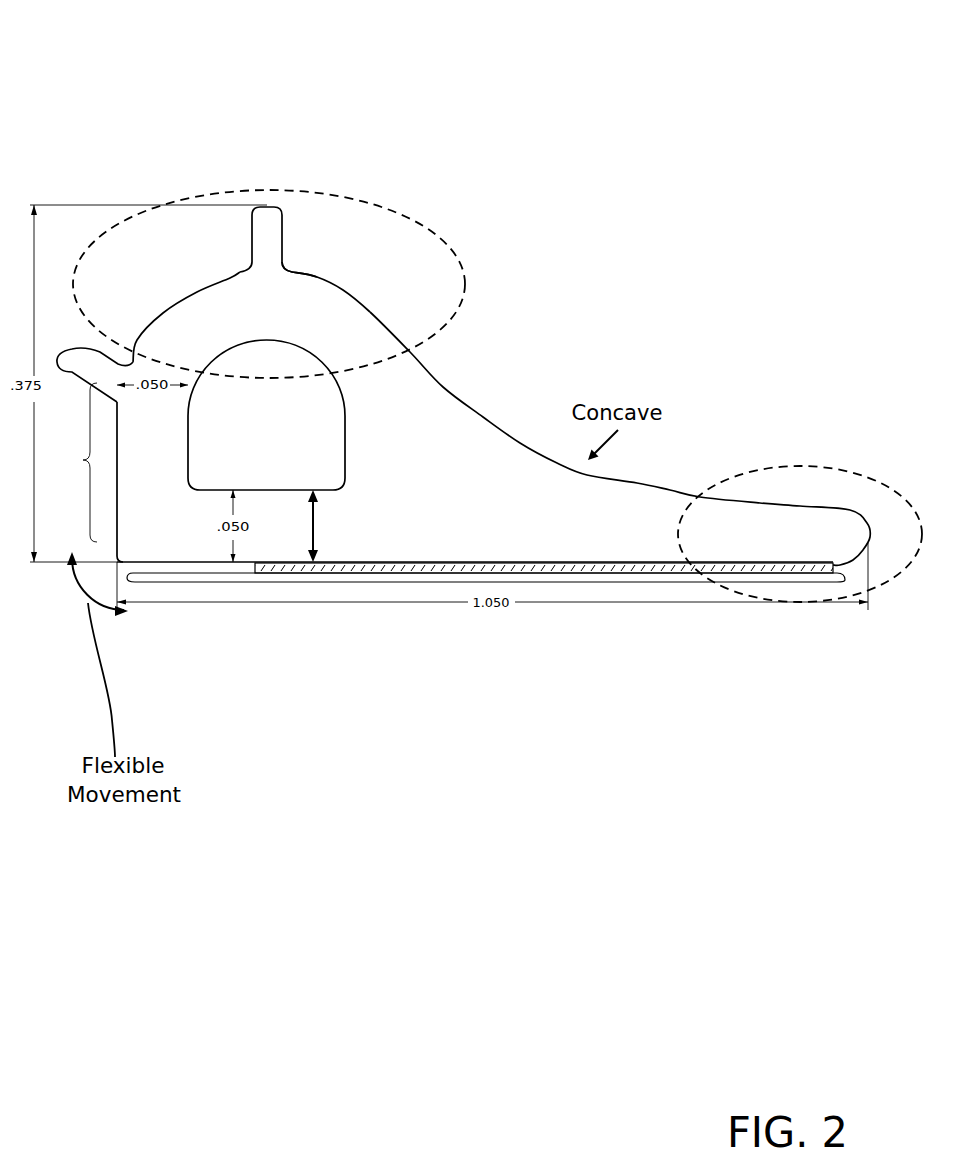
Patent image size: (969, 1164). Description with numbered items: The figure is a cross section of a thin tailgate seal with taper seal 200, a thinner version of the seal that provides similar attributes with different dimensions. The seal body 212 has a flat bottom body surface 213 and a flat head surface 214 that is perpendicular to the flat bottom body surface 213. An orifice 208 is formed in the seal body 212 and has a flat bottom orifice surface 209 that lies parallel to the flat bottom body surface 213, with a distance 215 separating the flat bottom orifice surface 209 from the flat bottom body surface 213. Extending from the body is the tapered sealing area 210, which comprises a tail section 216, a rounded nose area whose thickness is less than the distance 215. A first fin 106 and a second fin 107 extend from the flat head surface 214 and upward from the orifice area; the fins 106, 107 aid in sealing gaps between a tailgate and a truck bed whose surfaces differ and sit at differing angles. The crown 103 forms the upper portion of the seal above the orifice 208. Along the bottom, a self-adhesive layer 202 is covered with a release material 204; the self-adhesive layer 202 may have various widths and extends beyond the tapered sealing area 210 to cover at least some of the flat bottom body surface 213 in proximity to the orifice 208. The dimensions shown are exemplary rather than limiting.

The thin tailgate seal with taper seal 200 is at (463, 556).
The crown 103 is at (328, 193).
The first fin 106 is at (78, 367).
The second fin 107 is at (272, 233).
The orifice 208 is at (287, 410).
The flat bottom orifice surface 209 is at (333, 482).
The tapered sealing area 210 is at (566, 380).
The seal body 212 is at (285, 538).
The flat bottom body surface 213 is at (385, 584).
The flat head surface 214 is at (73, 482).
The distance 215 is at (315, 537).
The tail section 216 is at (802, 467).
The self-adhesive layer 202 is at (583, 563).
The release material 204 is at (612, 570).